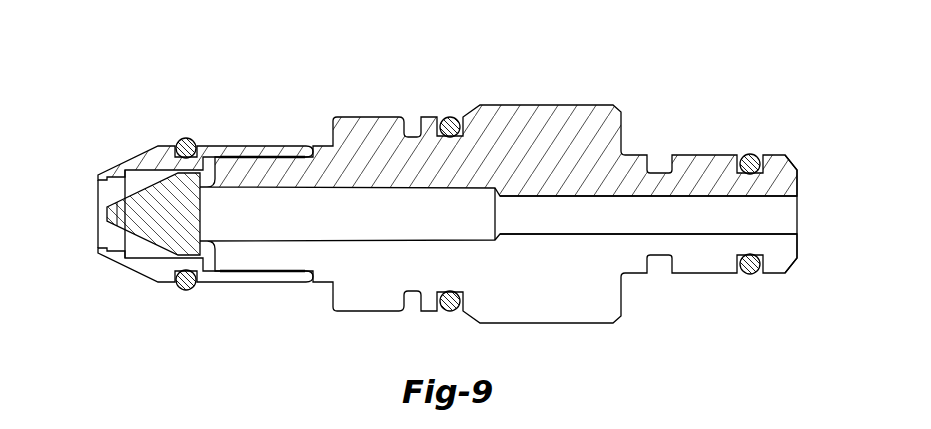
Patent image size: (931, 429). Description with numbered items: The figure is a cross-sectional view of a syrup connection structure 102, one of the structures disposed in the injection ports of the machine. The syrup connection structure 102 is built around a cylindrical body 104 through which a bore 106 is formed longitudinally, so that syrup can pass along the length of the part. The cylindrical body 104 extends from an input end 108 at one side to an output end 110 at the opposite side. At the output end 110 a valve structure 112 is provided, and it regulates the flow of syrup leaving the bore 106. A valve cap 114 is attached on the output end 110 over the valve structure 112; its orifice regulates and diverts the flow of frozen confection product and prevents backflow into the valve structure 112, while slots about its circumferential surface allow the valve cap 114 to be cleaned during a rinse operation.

The syrup connection structure 102 is at (447, 185).
The cylindrical body 104 is at (572, 105).
The bore 106 is at (658, 210).
The input end 108 is at (797, 223).
The output end 110 is at (211, 268).
The valve structure 112 is at (136, 226).
The valve cap 114 is at (115, 170).